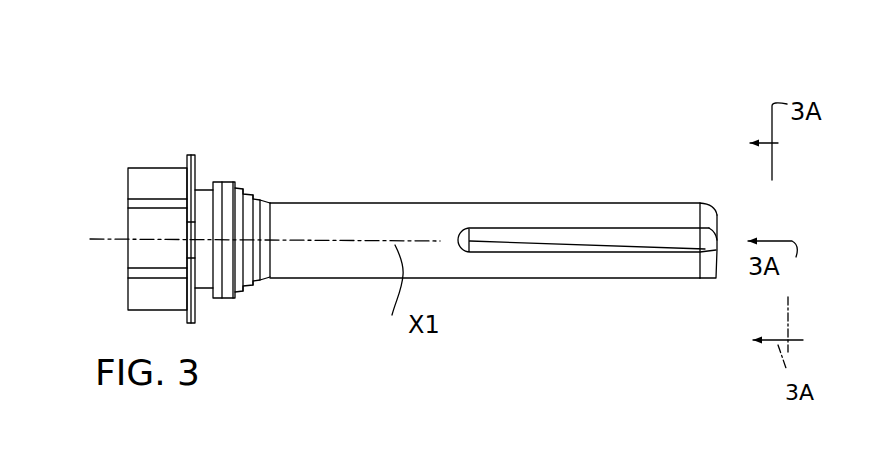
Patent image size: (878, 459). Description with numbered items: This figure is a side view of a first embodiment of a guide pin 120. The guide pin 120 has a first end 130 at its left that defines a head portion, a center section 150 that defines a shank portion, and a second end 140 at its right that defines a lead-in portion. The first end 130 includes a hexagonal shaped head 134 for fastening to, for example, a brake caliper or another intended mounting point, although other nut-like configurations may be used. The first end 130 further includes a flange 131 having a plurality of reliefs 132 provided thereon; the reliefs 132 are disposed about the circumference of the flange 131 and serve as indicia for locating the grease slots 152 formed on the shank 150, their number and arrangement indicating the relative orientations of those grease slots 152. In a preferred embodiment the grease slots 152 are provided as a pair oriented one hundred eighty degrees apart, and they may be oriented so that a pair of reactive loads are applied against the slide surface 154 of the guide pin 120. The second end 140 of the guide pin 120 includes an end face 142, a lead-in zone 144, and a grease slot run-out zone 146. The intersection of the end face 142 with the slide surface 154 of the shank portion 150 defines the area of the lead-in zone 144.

The guide pin 120 is at (502, 98).
The first end 130 is at (107, 192).
The hexagonal shaped head 134 is at (152, 167).
The flange 131 is at (190, 153).
The reliefs 132 is at (195, 240).
The center section 150 is at (445, 175).
The slide surface 154 is at (598, 200).
The grease slots 152 is at (625, 240).
The second end 140 is at (728, 216).
The lead-in zone 144 is at (713, 202).
The end face 142 is at (717, 255).
The grease slot run-out zone 146 is at (716, 278).